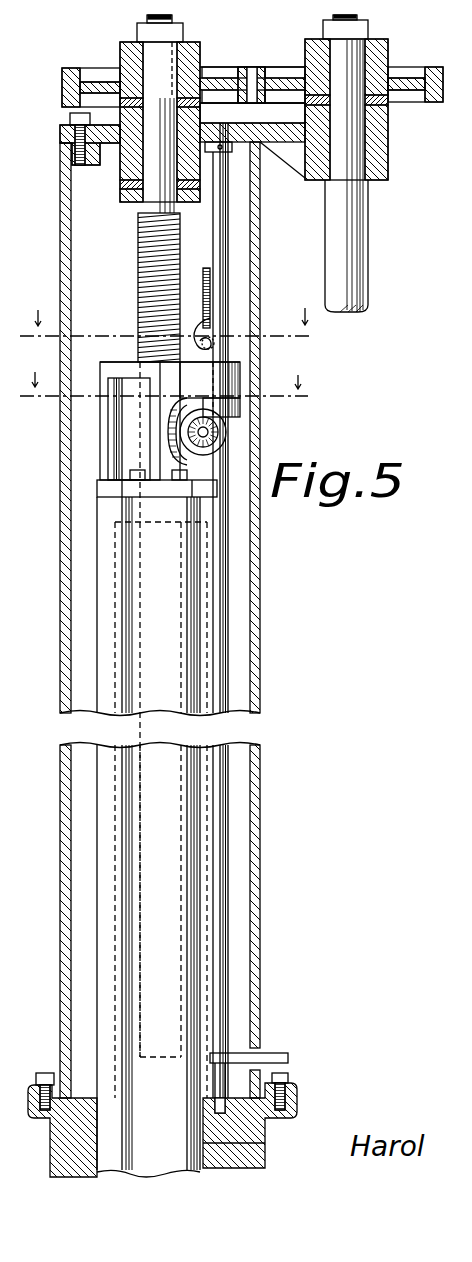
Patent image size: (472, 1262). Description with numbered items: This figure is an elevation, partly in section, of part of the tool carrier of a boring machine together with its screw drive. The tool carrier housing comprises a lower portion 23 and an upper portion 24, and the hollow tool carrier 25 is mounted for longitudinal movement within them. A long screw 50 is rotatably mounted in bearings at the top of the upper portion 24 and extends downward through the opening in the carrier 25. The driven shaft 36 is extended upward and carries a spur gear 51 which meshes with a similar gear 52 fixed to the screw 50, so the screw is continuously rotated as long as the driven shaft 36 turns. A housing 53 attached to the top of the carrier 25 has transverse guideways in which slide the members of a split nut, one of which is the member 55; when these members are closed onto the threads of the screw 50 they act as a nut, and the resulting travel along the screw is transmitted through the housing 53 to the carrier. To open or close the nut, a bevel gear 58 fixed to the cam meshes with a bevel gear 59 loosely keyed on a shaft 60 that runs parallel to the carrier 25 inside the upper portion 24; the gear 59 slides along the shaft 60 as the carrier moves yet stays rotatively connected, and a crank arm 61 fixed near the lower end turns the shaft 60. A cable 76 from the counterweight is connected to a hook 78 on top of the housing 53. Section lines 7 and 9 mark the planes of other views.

The section line 7- 7 is at (165, 327).
The section line 9- 9 is at (164, 389).
The lower portion of the tool carrier housing 23 is at (266, 1150).
The upper portion of the tool carrier housing 24 is at (261, 806).
The tool carrier 25 is at (110, 598).
The driven shaft 36 is at (366, 265).
The screw 50 is at (140, 220).
The spur gear 51 is at (428, 67).
The spur gear 52 is at (90, 59).
The housing 53 is at (112, 362).
The split nut member 55 is at (130, 418).
The bevel gear 58 is at (215, 444).
The bevel gear 59 is at (234, 416).
The shaft 60 is at (229, 230).
The crank arm 61 is at (281, 1055).
The cable 76 is at (210, 283).
The hook 78 is at (200, 322).